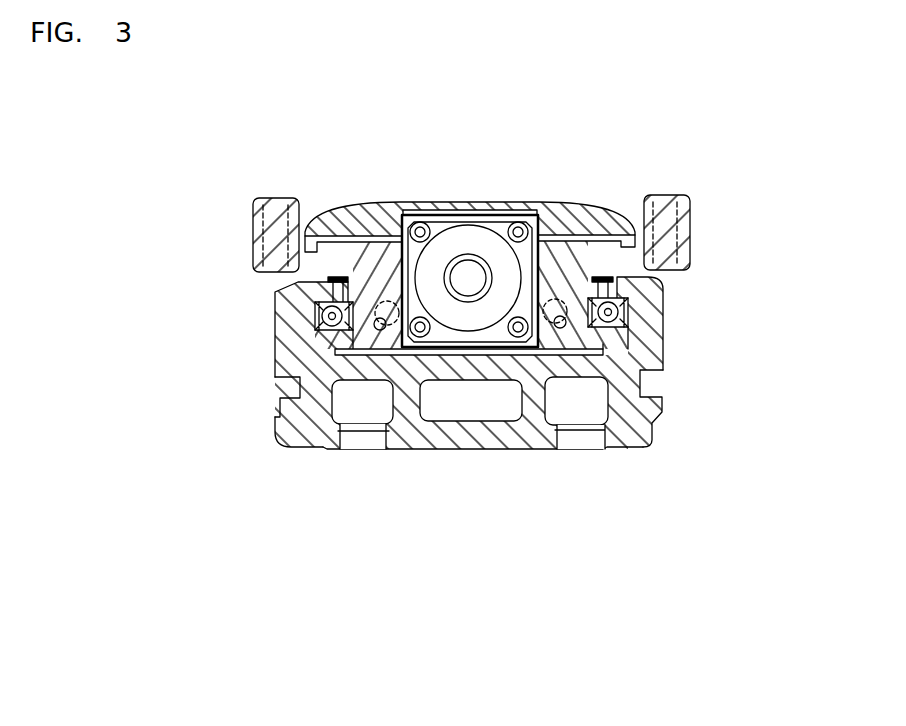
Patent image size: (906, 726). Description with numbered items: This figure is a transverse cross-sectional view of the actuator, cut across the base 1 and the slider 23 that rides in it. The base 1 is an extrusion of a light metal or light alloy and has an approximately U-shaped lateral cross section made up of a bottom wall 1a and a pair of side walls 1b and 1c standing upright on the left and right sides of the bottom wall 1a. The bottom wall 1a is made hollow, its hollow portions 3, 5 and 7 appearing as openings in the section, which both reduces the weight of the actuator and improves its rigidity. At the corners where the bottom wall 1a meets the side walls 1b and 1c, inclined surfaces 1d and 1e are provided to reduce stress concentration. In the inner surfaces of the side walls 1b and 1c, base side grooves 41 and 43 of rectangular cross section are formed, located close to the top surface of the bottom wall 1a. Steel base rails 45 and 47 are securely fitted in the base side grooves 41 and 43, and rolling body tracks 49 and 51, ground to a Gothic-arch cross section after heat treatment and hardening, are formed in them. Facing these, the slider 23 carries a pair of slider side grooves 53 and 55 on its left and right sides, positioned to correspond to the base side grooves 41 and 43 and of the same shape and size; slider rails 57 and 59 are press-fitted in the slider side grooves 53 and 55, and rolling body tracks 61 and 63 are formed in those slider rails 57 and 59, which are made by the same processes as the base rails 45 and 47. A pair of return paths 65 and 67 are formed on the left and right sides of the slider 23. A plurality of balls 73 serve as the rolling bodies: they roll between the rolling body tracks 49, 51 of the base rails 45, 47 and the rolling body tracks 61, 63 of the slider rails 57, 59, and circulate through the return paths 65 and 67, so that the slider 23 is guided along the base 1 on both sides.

The base 1 is at (447, 459).
The bottom wall 1a is at (527, 430).
The side wall 1b is at (288, 328).
The side wall 1c is at (658, 340).
The inclined surface 1d is at (306, 420).
The inclined surface 1e is at (640, 420).
The hollow portion 3 is at (322, 448).
The hollow portion 5 is at (438, 421).
The hollow portion 7 is at (593, 414).
The slider 23 is at (545, 205).
The base side groove 41 is at (274, 303).
The base side groove 43 is at (633, 298).
The base rail 45 is at (321, 343).
The base rail 47 is at (627, 325).
The rolling body track 49 is at (340, 277).
The rolling body track 51 is at (612, 276).
The slider side groove 53 is at (343, 278).
The slider side groove 55 is at (607, 277).
The slider rail 57 is at (330, 334).
The slider rail 59 is at (603, 340).
The rolling body track 61 is at (322, 336).
The rolling body track 63 is at (640, 372).
The return path 65 is at (391, 328).
The return path 67 is at (553, 323).
The ball 73 is at (323, 322).